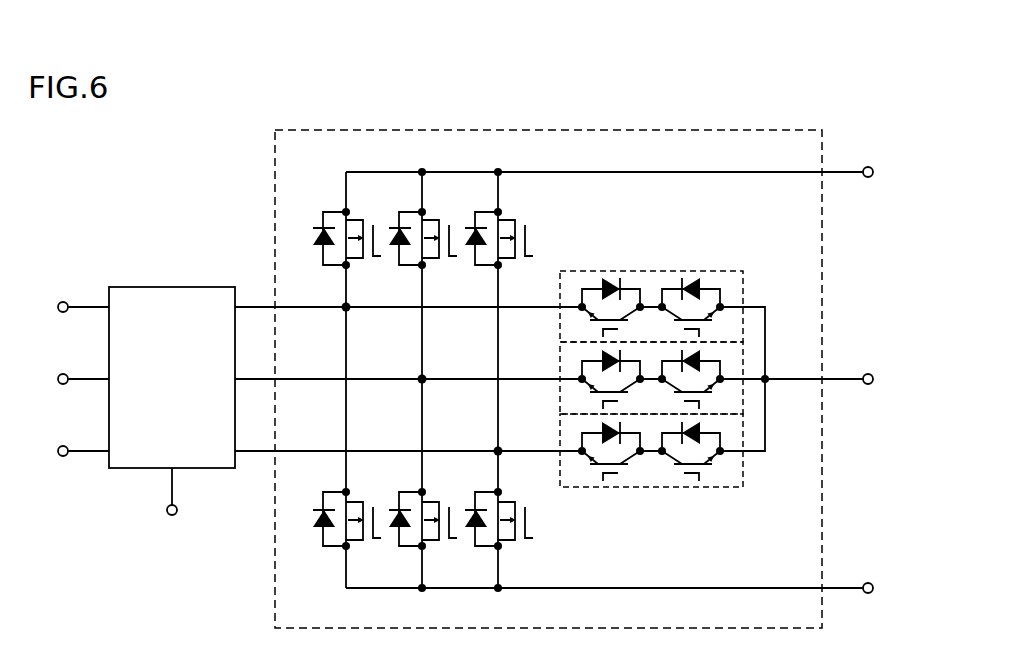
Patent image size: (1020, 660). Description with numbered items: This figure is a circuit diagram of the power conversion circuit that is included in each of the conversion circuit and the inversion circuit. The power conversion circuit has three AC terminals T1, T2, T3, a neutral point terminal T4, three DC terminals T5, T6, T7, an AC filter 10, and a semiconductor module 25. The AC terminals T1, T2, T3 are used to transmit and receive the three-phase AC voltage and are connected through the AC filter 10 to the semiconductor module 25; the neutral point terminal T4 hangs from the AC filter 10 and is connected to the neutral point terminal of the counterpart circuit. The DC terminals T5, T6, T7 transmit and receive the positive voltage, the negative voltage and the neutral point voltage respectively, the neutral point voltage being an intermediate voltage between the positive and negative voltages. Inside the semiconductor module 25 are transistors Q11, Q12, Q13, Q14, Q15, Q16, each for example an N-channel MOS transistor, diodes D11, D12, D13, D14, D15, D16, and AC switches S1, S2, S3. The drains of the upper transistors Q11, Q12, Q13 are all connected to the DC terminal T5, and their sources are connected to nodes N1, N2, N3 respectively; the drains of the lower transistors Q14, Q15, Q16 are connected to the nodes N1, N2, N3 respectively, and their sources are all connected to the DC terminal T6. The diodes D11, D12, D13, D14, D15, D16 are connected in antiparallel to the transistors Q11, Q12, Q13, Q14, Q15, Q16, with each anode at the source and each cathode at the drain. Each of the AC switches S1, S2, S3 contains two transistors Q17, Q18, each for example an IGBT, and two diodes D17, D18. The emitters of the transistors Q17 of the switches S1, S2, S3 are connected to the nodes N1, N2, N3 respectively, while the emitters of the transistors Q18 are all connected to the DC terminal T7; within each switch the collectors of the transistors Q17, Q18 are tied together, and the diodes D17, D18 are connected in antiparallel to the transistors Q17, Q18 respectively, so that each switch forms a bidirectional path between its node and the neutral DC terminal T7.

The AC filter 10 is at (174, 287).
The semiconductor module 25 is at (373, 130).
The AC terminal T1 is at (59, 302).
The AC terminal T2 is at (59, 374).
The AC terminal T3 is at (59, 446).
The neutral point terminal T4 is at (171, 515).
The DC terminal T5 is at (871, 167).
The DC terminal T6 is at (871, 583).
The DC terminal T7 is at (871, 374).
The node N1 is at (345, 310).
The node N2 is at (421, 382).
The node N3 is at (496, 449).
The transistor Q11 is at (368, 259).
The transistor Q12 is at (444, 259).
The transistor Q13 is at (520, 259).
The transistor Q14 is at (368, 541).
The transistor Q15 is at (444, 541).
The transistor Q16 is at (520, 541).
The diode D11 is at (320, 229).
The diode D12 is at (396, 229).
The diode D13 is at (472, 229).
The diode D14 is at (320, 511).
The diode D15 is at (396, 511).
The diode D16 is at (472, 511).
The transistor Q17 is at (628, 333).
The transistor Q18 is at (712, 333).
The diode D17 is at (609, 272).
The diode D18 is at (692, 272).
The AC switch S1 is at (747, 282).
The AC switch S2 is at (747, 357).
The AC switch S3 is at (747, 473).